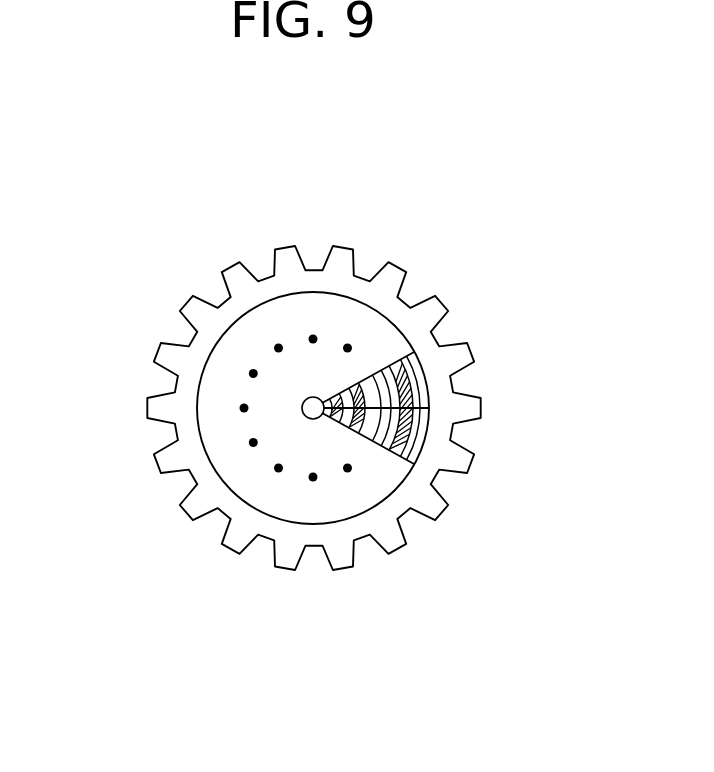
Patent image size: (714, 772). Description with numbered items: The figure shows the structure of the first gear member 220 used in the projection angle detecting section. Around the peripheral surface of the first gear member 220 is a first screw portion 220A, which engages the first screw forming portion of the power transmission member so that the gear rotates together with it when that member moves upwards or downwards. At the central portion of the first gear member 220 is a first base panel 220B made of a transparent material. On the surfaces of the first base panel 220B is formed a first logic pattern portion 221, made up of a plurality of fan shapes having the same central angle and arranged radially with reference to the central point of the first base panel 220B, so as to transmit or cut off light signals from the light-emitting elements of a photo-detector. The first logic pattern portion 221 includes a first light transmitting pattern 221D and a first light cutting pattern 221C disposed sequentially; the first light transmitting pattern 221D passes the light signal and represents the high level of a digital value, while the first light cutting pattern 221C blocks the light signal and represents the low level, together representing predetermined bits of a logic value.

The first gear member 220 is at (339, 132).
The first screw portion 220A is at (158, 470).
The first base panel 220B is at (370, 475).
The first logic pattern portion 221 is at (420, 446).
The first light cutting pattern 221C is at (353, 377).
The first light transmitting pattern 221D is at (399, 342).